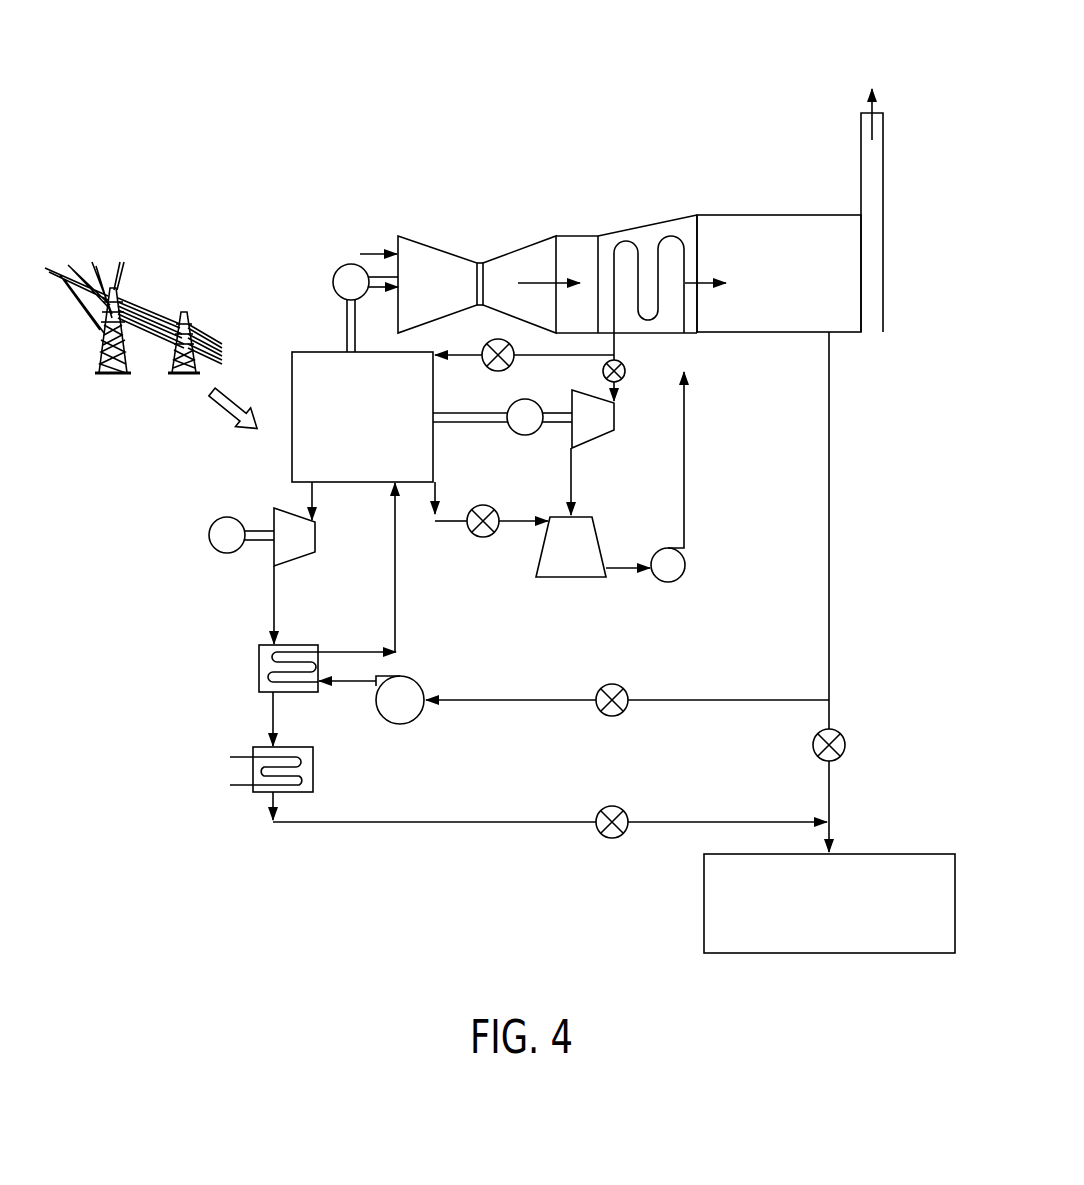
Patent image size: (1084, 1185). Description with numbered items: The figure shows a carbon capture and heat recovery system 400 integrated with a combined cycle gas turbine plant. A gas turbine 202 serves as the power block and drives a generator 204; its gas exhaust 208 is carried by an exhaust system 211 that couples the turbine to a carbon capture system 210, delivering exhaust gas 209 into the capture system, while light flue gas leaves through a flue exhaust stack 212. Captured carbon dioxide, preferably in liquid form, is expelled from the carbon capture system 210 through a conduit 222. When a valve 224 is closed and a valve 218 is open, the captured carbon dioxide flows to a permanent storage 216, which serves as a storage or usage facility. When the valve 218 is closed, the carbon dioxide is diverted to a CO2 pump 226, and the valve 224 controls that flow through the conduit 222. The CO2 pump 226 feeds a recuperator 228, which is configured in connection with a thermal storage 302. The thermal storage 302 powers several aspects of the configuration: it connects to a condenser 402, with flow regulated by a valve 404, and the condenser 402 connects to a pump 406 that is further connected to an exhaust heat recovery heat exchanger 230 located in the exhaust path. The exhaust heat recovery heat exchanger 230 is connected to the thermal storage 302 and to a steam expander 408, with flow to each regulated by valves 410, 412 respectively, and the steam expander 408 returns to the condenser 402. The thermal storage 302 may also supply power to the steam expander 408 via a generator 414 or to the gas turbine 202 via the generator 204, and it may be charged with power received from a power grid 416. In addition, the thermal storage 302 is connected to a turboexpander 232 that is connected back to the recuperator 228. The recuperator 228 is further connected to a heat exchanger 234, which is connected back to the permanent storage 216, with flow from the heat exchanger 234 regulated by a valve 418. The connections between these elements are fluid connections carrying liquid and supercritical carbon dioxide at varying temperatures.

The carbon capture and heat recovery system 400 is at (352, 128).
The gas turbine 202 is at (416, 296).
The generator 204 is at (334, 281).
The gas exhaust 208 is at (542, 281).
The exhaust gas 209 is at (690, 283).
The carbon capture system 210 is at (787, 226).
The exhaust system 211 is at (617, 251).
The flue exhaust stack 212 is at (868, 163).
The permanent storage 216 is at (704, 906).
The valve 218 is at (846, 741).
The conduit 222 is at (830, 456).
The valve 224 is at (625, 690).
The CO2 pump 226 is at (425, 689).
The recuperator 228 is at (302, 645).
The exhaust heat recovery heat exchanger 230 is at (652, 322).
The turboexpander 232 is at (318, 540).
The heat exchanger 234 is at (315, 773).
The thermal storage 302 is at (308, 351).
The condenser 402 is at (554, 558).
The valve 404 is at (484, 538).
The pump 406 is at (686, 568).
The steam expander 408 is at (614, 428).
The valve 410 is at (496, 372).
The valve 412 is at (622, 378).
The generator 414 is at (527, 436).
The power grid 416 is at (212, 404).
The valve 418 is at (625, 812).